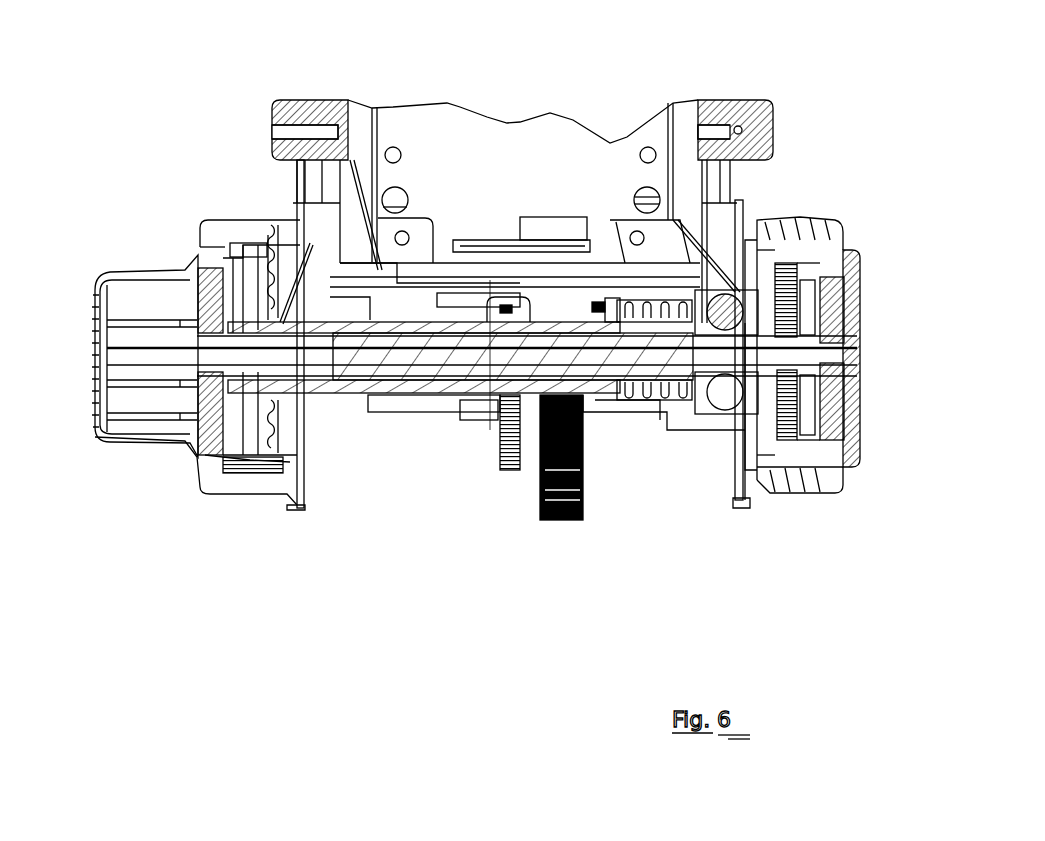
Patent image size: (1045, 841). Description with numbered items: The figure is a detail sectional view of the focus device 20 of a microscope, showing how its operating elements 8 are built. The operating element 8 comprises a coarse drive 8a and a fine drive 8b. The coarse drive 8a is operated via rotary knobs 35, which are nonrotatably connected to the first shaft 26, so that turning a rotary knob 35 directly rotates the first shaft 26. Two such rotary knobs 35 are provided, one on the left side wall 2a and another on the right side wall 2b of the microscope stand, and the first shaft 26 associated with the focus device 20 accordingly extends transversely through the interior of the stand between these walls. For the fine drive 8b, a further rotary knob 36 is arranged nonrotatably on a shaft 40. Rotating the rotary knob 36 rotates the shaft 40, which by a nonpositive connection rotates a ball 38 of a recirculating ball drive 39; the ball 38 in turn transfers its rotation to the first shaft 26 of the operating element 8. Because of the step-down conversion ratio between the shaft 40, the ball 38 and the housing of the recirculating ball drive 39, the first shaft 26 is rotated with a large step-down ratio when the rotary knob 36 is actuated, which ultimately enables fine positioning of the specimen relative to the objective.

The focus device 20 is at (530, 58).
The left side wall 2a is at (295, 185).
The right side wall 2b is at (745, 180).
The operating element 8 is at (180, 462).
The coarse drive 8a is at (283, 218).
The fine drive 8b is at (170, 273).
The rotary knob 36 is at (125, 270).
The ball 38 is at (745, 320).
The recirculating ball drive 39 is at (728, 400).
The first shaft 26 is at (830, 358).
The shaft 40 is at (322, 375).
The rotary knob 35 is at (300, 460).